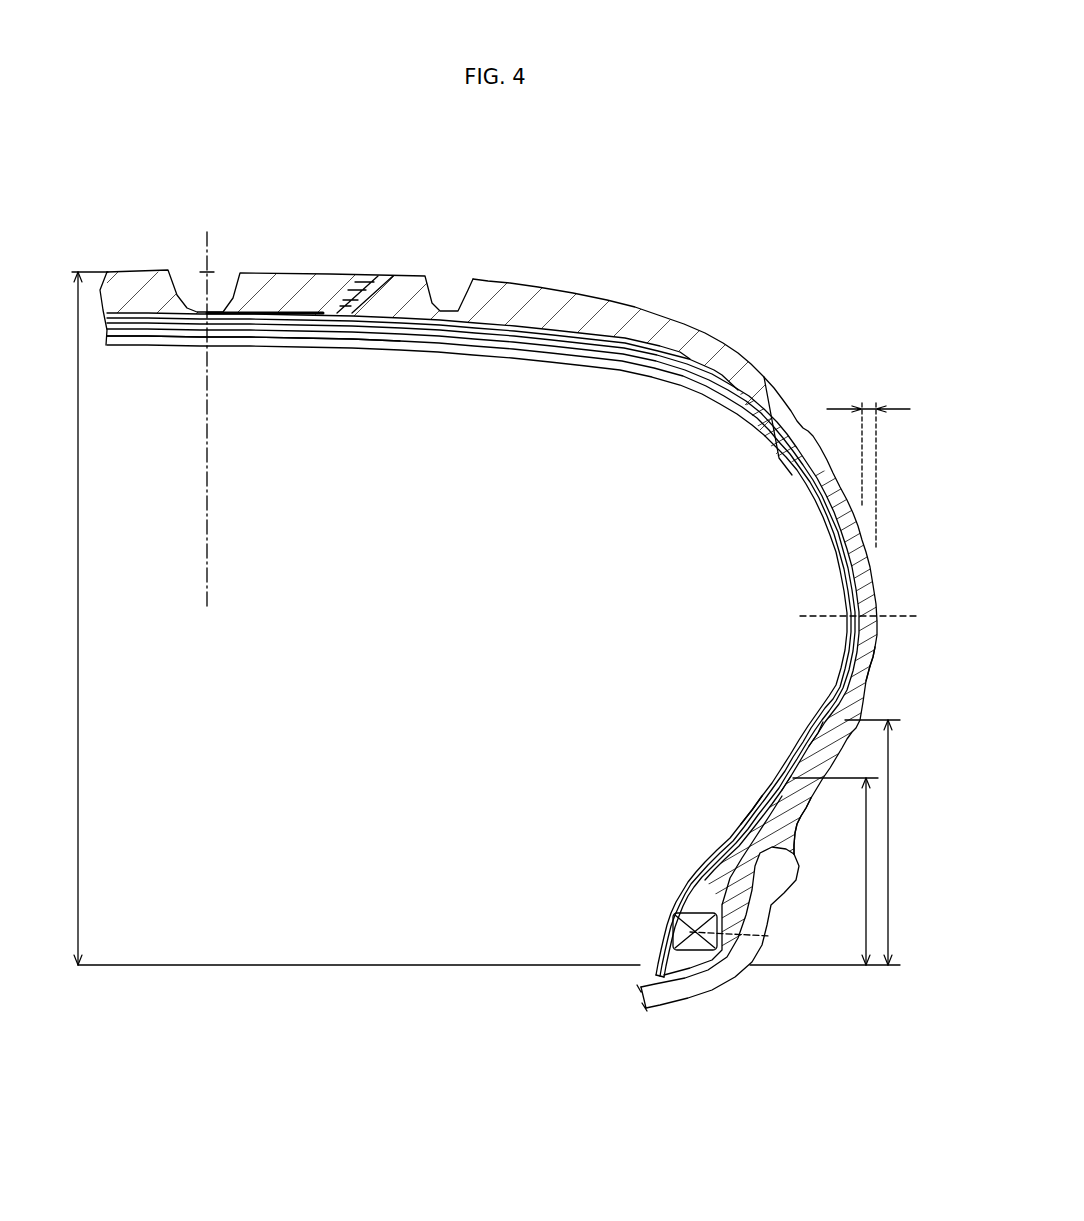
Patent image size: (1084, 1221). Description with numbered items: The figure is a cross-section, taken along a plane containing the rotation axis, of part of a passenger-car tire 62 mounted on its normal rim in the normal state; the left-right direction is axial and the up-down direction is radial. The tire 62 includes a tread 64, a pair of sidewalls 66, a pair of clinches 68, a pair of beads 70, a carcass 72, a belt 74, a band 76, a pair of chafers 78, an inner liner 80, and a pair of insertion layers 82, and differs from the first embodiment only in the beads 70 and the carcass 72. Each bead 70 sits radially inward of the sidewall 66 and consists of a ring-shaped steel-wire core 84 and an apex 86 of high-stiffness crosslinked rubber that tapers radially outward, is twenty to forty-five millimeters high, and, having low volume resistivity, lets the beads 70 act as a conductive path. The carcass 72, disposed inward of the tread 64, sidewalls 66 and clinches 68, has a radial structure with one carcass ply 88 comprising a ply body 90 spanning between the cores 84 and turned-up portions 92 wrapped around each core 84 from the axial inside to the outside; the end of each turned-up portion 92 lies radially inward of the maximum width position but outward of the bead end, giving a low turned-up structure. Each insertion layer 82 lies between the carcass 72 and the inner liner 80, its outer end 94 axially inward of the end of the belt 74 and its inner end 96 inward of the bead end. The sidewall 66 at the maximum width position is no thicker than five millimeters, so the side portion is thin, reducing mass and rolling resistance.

The tire 62 is at (724, 270).
The tread 64 is at (309, 267).
The sidewall 66 is at (870, 566).
The clinch 68 is at (777, 824).
The bead 70 is at (610, 873).
The carcass 72 is at (243, 345).
The belt 74 is at (403, 345).
The band 76 is at (513, 321).
The chafer 78 is at (646, 976).
The inner liner 80 is at (798, 472).
The insertion layer 82 is at (839, 538).
The core 84 is at (673, 934).
The apex 86 is at (677, 880).
The carcass ply 88 is at (253, 338).
The ply body 90 is at (872, 649).
The turned-up portion 92 is at (817, 722).
The outer end of the insertion layer 94 is at (680, 384).
The inner end of the insertion layer 96 is at (752, 803).